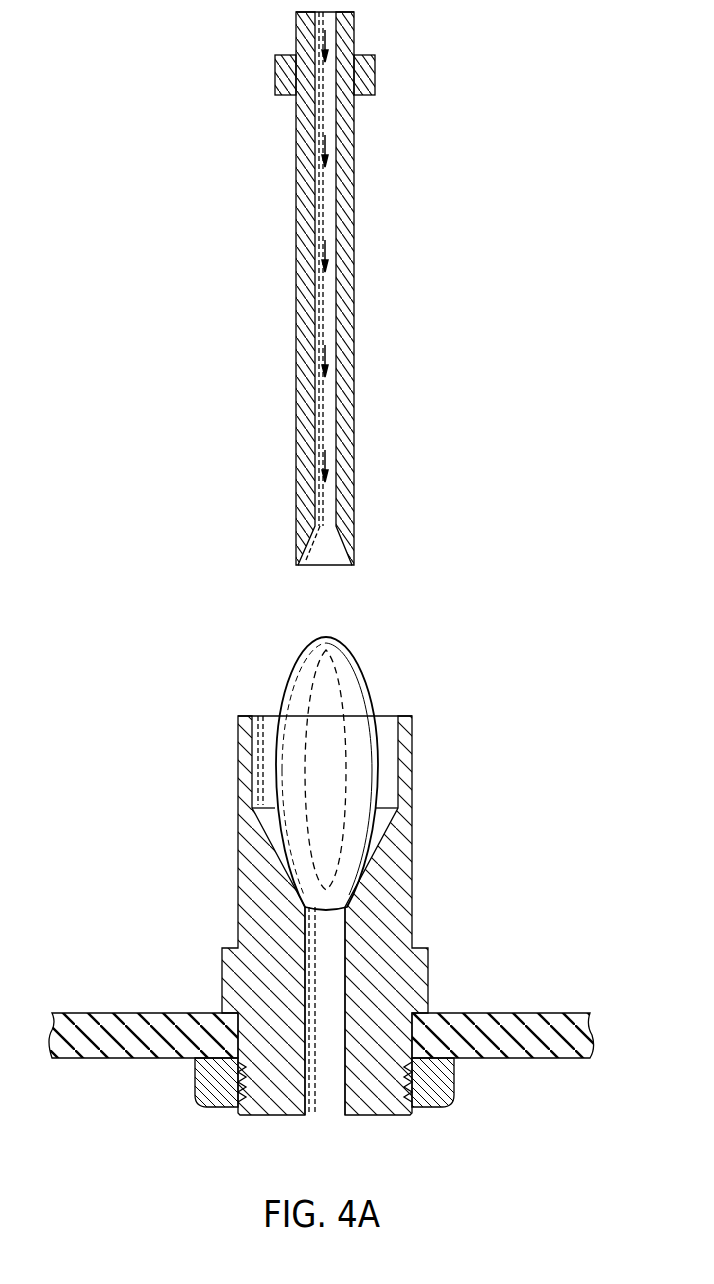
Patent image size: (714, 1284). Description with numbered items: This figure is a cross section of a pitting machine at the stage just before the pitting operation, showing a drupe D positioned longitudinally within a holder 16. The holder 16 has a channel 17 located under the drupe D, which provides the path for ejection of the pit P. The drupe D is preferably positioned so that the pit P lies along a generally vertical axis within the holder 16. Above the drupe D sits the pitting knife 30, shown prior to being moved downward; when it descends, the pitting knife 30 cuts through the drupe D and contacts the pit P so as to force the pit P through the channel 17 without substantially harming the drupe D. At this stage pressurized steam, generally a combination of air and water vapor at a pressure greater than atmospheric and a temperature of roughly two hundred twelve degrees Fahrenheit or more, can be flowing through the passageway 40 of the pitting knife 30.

The pitting knife 30 is at (355, 27).
The passageway 40 is at (322, 33).
The holder 16 is at (412, 735).
The channel 17 is at (328, 935).
The drupe D is at (351, 664).
The pit P is at (322, 677).